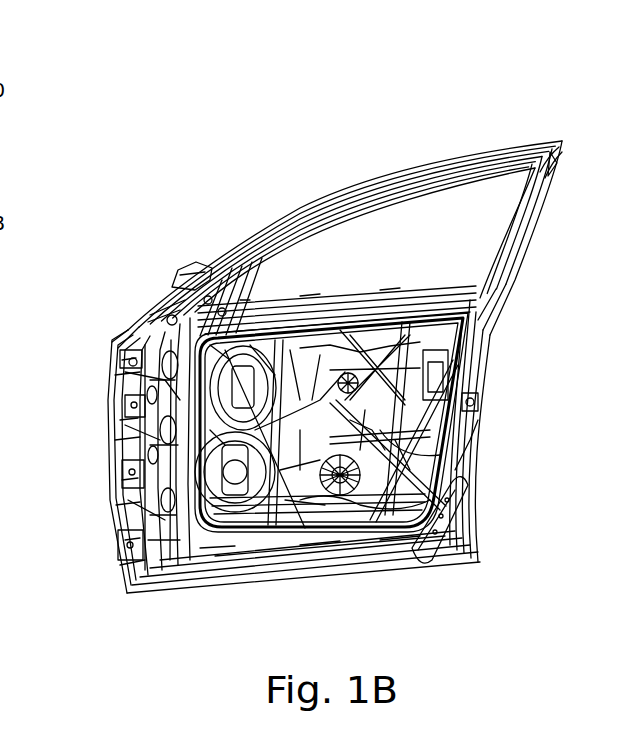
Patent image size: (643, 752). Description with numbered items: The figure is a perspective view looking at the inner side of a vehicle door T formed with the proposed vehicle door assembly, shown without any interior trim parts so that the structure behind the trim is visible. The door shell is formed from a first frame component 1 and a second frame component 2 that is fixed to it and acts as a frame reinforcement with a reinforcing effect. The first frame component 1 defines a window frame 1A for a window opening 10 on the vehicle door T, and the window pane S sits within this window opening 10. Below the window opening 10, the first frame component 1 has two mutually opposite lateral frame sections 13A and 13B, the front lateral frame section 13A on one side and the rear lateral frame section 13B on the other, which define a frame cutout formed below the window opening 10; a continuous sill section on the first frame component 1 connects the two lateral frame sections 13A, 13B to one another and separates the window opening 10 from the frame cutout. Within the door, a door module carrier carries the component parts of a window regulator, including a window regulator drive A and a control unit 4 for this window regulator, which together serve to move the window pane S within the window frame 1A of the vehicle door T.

The vehicle door T is at (524, 108).
The window opening 10 is at (566, 146).
The window frame 1A is at (318, 198).
The first frame component 1 is at (148, 295).
The window pane S is at (452, 241).
The lateral frame section 13B is at (488, 340).
The second frame component 2 is at (473, 430).
The lateral frame section 13A is at (108, 378).
The control unit 4 is at (112, 432).
The window regulator drive A is at (340, 562).